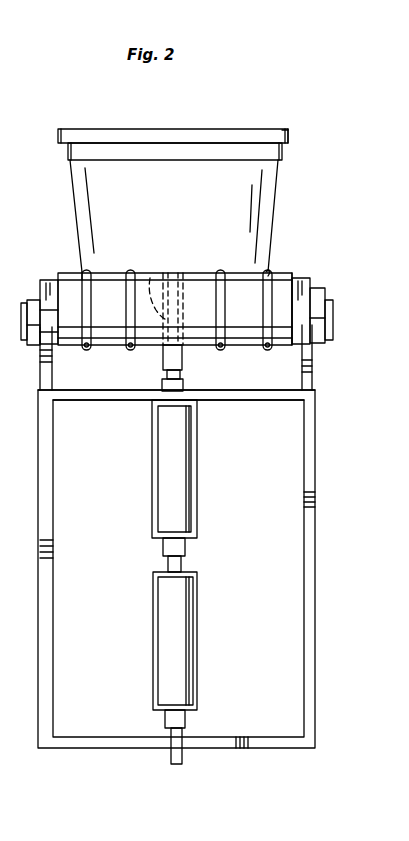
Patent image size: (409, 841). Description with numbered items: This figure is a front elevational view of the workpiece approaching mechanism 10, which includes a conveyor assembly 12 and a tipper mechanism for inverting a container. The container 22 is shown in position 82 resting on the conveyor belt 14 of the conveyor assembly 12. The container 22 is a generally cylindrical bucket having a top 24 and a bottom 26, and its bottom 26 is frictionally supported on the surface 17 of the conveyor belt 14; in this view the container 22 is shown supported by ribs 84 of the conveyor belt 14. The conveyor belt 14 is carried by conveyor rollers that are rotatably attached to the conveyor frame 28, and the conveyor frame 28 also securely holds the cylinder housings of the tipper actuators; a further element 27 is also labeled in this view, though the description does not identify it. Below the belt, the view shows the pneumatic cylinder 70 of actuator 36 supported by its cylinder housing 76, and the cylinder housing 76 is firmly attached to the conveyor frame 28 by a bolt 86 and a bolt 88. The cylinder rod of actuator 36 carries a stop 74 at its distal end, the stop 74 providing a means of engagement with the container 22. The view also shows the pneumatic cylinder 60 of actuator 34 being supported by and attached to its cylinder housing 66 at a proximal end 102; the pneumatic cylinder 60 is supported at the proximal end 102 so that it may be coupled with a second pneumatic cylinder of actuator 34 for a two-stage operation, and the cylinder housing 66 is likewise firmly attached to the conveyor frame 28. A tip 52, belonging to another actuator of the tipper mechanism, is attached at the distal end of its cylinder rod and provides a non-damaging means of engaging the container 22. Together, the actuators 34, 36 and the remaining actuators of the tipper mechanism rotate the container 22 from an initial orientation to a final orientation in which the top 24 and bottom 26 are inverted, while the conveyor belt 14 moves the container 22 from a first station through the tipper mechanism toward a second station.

The workpiece approaching mechanism 10 is at (302, 214).
The conveyor assembly 12 is at (331, 292).
The conveyor belt 14 is at (272, 268).
The surface 17 is at (295, 272).
The container 22 is at (75, 206).
The top 24 is at (58, 128).
The bottom 26 is at (82, 273).
The roller shaft 27 is at (175, 273).
The conveyor frame 28 is at (320, 310).
The actuator 34 is at (138, 607).
The actuator 36 is at (133, 455).
The tip 52 is at (150, 266).
The pneumatic cylinder 60 is at (180, 648).
The cylinder housing 66 is at (311, 512).
The pneumatic cylinder 70 is at (180, 466).
The stop 74 is at (185, 275).
The cylinder housing 76 is at (297, 394).
The position 82 is at (288, 130).
The ribs 84 is at (131, 351).
The bolt 86 is at (333, 332).
The bolt 88 is at (27, 340).
The proximal end 102 is at (168, 760).